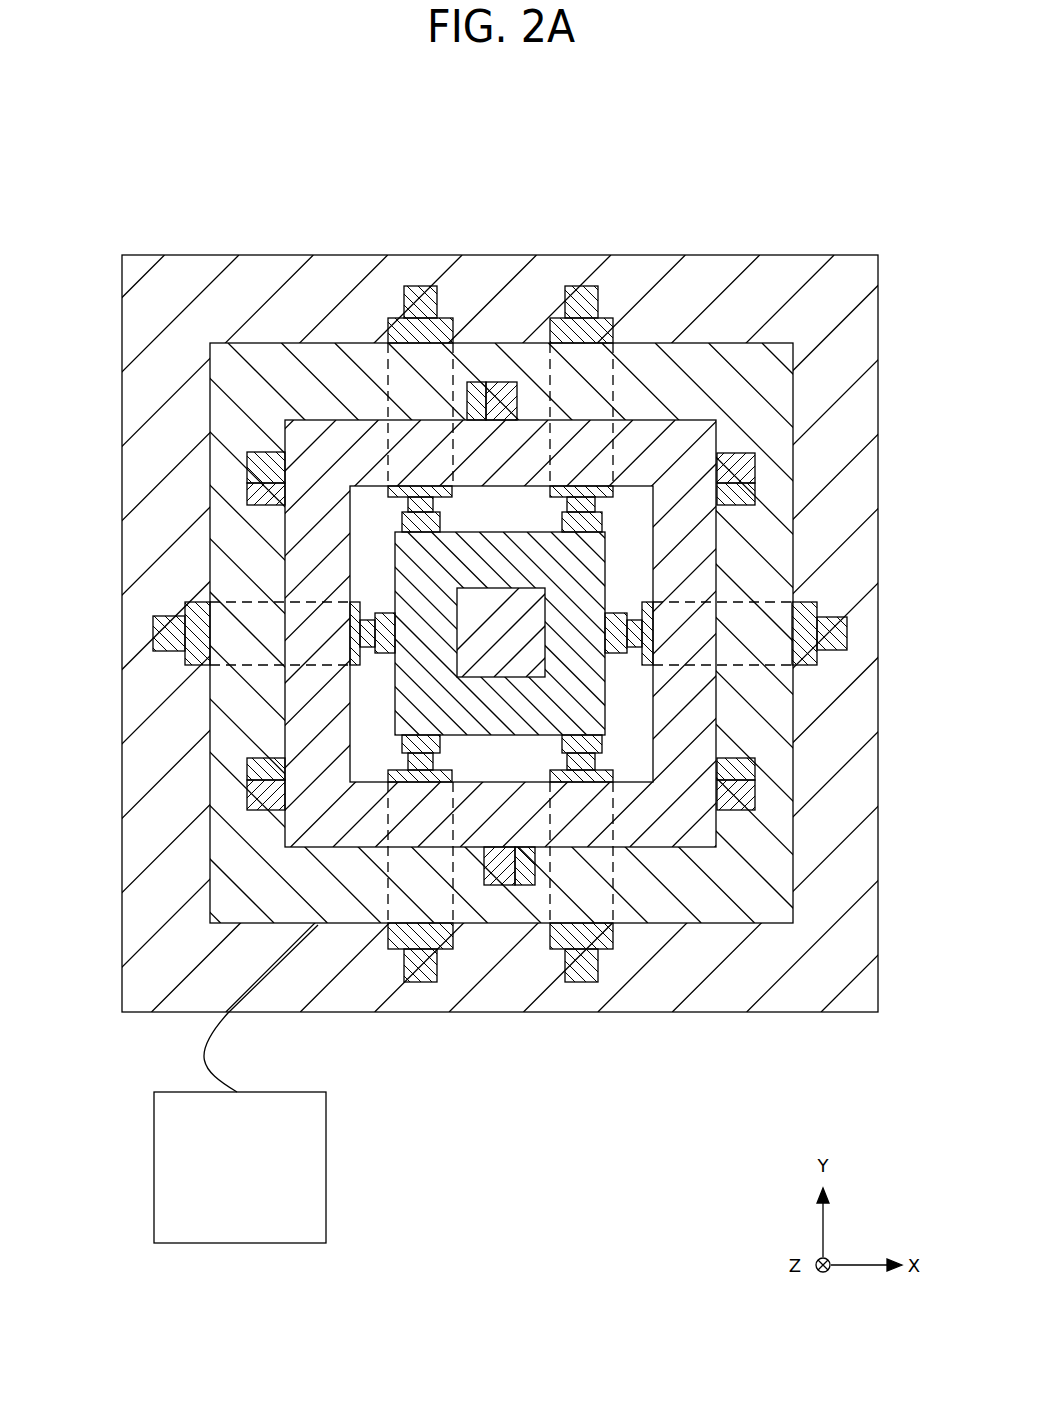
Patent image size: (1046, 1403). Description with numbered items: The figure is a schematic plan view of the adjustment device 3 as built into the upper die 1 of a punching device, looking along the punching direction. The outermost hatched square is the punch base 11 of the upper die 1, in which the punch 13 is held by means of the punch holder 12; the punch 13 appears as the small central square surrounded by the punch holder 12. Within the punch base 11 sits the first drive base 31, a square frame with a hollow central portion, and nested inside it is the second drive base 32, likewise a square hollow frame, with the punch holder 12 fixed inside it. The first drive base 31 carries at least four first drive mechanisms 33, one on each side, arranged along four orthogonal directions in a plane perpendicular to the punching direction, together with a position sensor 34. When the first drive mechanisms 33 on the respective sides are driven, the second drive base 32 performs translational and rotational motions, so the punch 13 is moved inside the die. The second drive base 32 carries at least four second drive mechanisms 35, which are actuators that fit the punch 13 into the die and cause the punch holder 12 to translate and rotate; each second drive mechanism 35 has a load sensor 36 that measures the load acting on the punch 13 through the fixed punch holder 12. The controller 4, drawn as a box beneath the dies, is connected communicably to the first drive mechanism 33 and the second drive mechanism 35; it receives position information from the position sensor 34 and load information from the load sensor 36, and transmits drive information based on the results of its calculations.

The upper die 1 is at (523, 556).
The adjustment device 3 is at (499, 338).
The controller 4 is at (327, 1138).
The punch base 11 is at (248, 287).
The punch holder 12 is at (432, 568).
The punch 13 is at (493, 628).
The first drive base 31 is at (637, 363).
The second drive base 32 is at (680, 475).
The first drive mechanism 33 is at (737, 466).
The position sensor 34 is at (737, 494).
The second drive mechanism 35 is at (803, 653).
The load sensor 36 is at (585, 744).